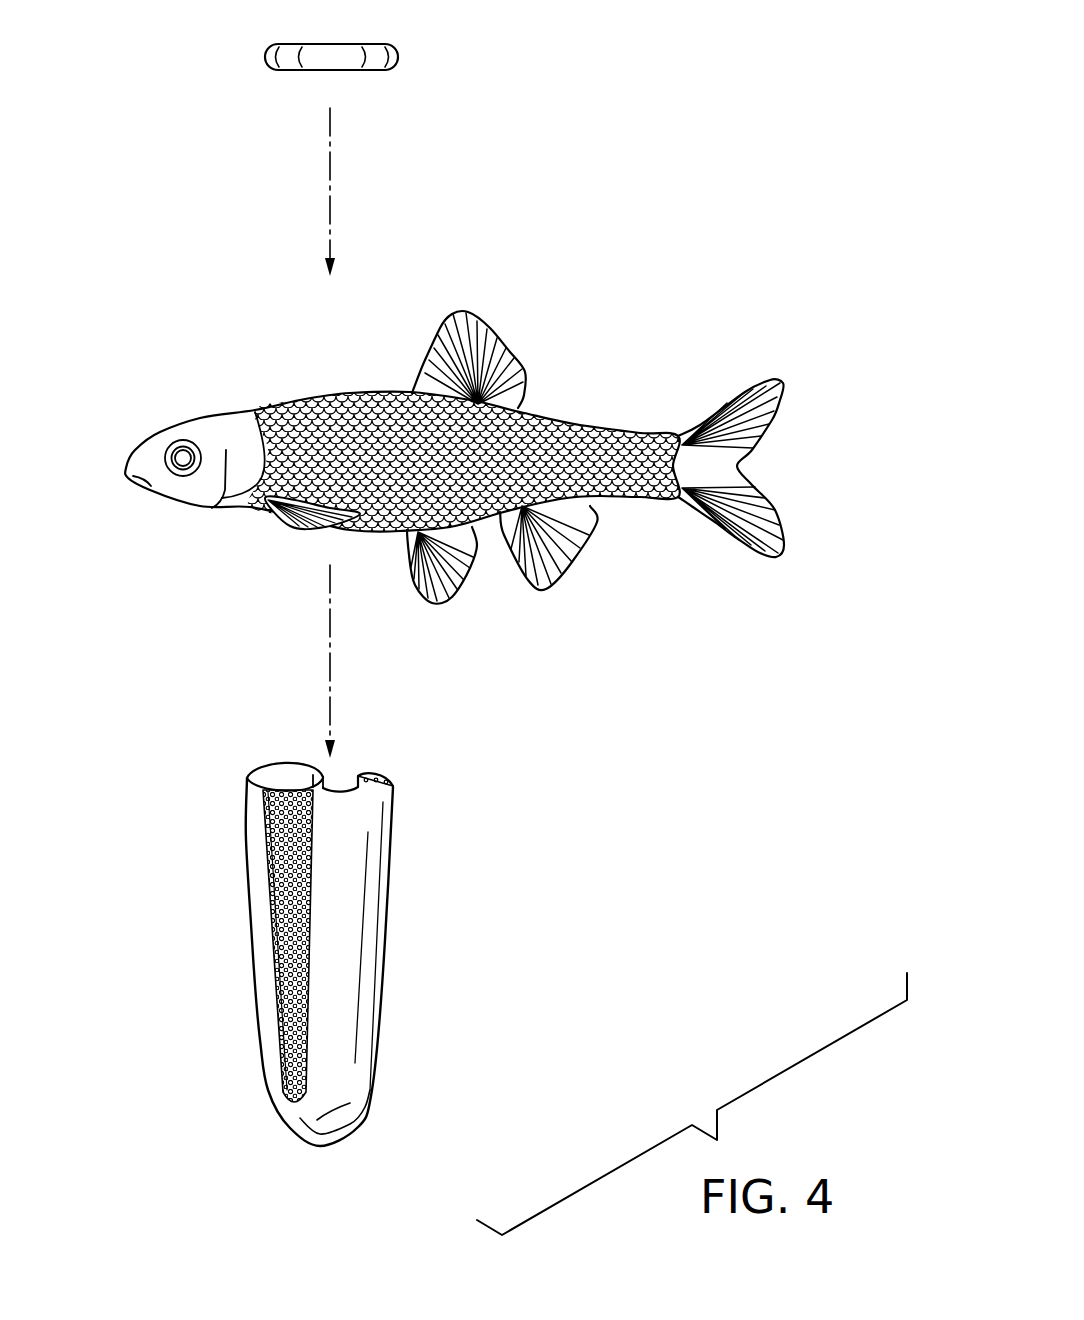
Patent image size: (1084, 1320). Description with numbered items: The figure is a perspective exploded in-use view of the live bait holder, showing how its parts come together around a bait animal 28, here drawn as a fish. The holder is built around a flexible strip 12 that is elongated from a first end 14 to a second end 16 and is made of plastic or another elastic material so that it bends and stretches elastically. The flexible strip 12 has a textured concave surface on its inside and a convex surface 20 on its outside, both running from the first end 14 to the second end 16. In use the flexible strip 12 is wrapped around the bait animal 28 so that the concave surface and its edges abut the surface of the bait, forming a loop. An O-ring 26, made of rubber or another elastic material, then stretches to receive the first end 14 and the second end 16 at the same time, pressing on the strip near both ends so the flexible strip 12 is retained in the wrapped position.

The flexible strip 12 is at (289, 902).
The first end 14 is at (257, 773).
The second end 16 is at (393, 786).
The convex surface 20 is at (333, 1080).
The O-ring 26 is at (370, 35).
The bait animal 28 is at (782, 471).